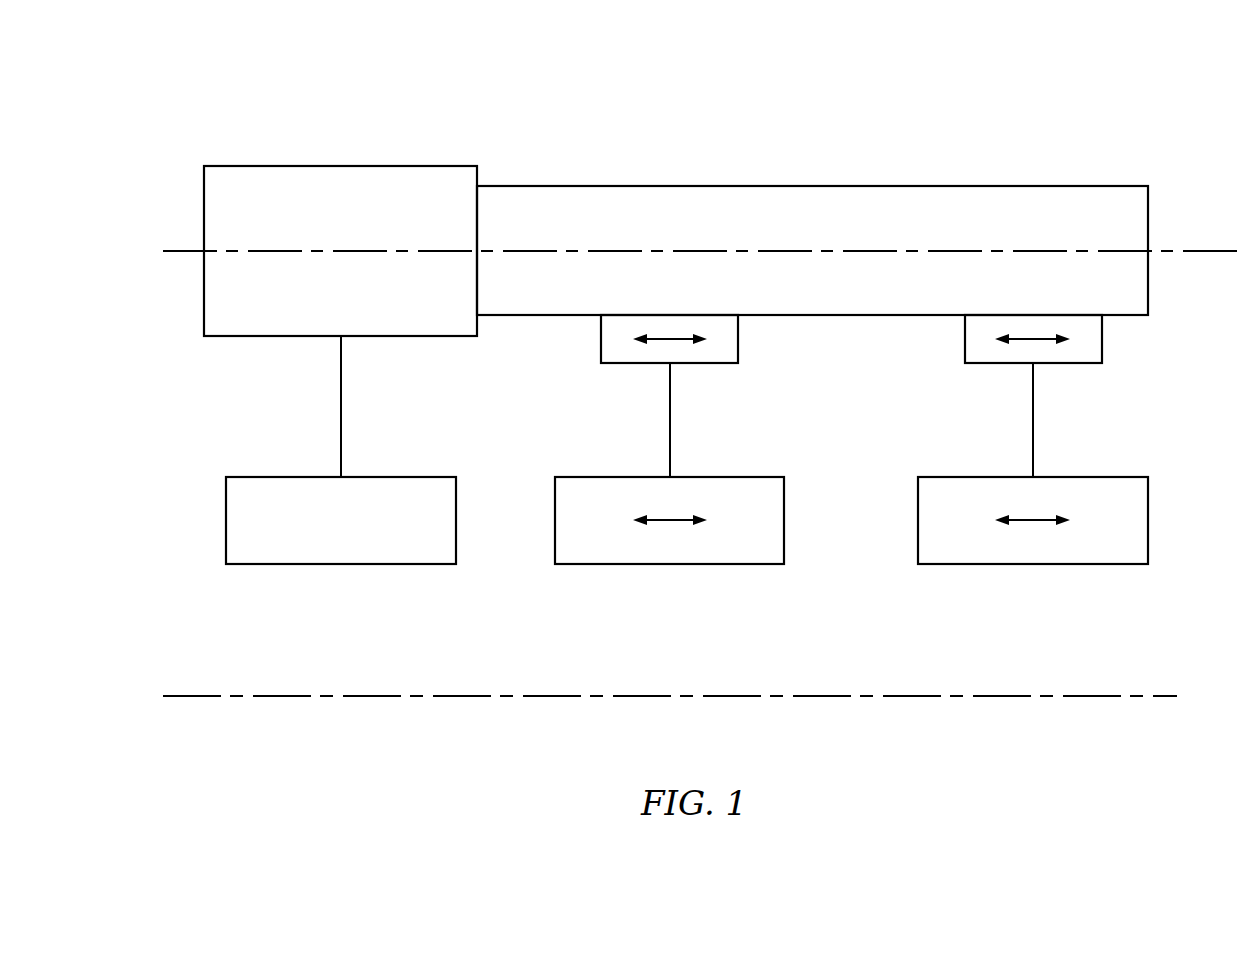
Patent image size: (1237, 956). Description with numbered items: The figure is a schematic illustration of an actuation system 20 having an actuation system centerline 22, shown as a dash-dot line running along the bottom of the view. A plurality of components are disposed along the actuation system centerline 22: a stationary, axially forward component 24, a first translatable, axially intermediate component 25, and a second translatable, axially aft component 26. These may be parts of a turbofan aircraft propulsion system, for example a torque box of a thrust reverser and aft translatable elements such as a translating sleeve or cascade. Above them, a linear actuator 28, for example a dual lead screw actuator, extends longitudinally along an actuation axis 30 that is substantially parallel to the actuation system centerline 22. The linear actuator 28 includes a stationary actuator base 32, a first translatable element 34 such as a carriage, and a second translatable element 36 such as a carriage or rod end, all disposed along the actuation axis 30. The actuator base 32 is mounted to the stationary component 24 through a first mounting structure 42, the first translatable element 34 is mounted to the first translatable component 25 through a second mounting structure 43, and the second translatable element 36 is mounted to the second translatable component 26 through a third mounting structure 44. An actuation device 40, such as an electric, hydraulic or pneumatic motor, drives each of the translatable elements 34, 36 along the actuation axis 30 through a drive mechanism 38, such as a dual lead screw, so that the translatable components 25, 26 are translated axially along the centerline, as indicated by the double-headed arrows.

The actuation system 20 is at (676, 376).
The actuation system centerline 22 is at (1145, 698).
The stationary component 24 is at (282, 566).
The first translatable component 25 is at (608, 566).
The second translatable component 26 is at (948, 566).
The linear actuator 28 is at (290, 146).
The actuation axis 30 is at (1175, 252).
The stationary actuator base 32 is at (232, 338).
The first translatable element 34 is at (620, 366).
The second translatable element 36 is at (980, 365).
The drive mechanism 38 is at (604, 186).
The actuation device 40 is at (413, 166).
The first mounting structure 42 is at (332, 428).
The second mounting structure 43 is at (662, 443).
The third mounting structure 44 is at (1025, 432).